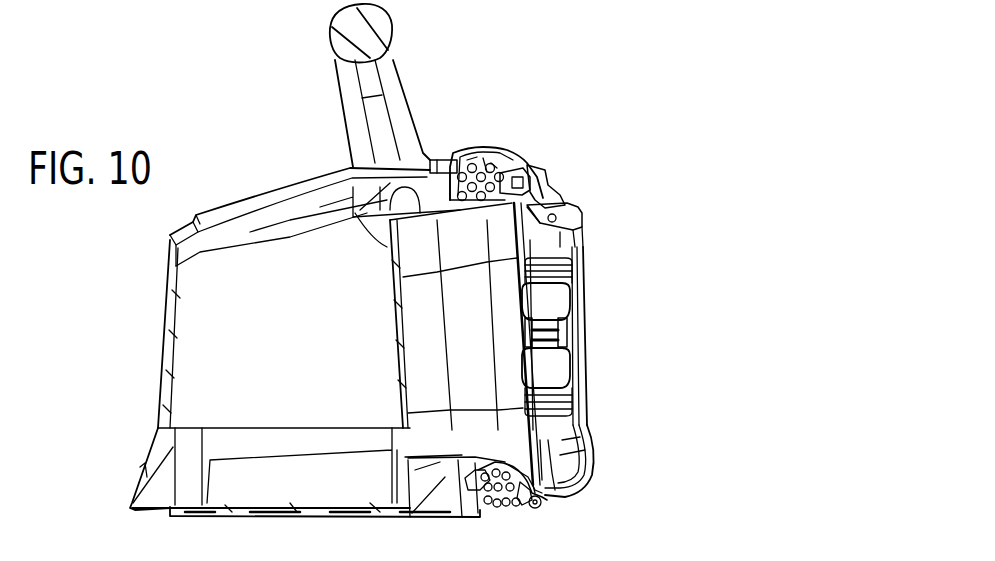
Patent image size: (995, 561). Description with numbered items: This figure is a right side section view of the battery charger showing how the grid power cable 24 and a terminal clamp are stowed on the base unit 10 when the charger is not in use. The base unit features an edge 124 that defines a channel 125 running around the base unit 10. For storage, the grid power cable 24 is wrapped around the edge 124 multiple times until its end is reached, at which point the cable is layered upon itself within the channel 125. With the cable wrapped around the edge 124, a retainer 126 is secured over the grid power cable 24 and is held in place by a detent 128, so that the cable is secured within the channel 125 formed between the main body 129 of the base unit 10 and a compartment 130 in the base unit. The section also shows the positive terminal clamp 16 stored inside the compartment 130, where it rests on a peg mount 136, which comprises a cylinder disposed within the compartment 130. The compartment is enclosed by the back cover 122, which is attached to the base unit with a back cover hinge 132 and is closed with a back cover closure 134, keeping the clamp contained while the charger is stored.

The base unit 10 is at (262, 82).
The main body 129 is at (373, 307).
The detent 128 is at (443, 147).
The retainer 126 is at (485, 148).
The channel 125 is at (502, 150).
The grid power cable 24 is at (510, 158).
The edge 124 is at (540, 197).
The back cover closure 134 is at (540, 200).
The positive terminal clamp 16 is at (560, 300).
The peg mount 136 is at (548, 337).
The back cover 122 is at (588, 388).
The compartment 130 is at (557, 430).
The back cover hinge 132 is at (542, 503).